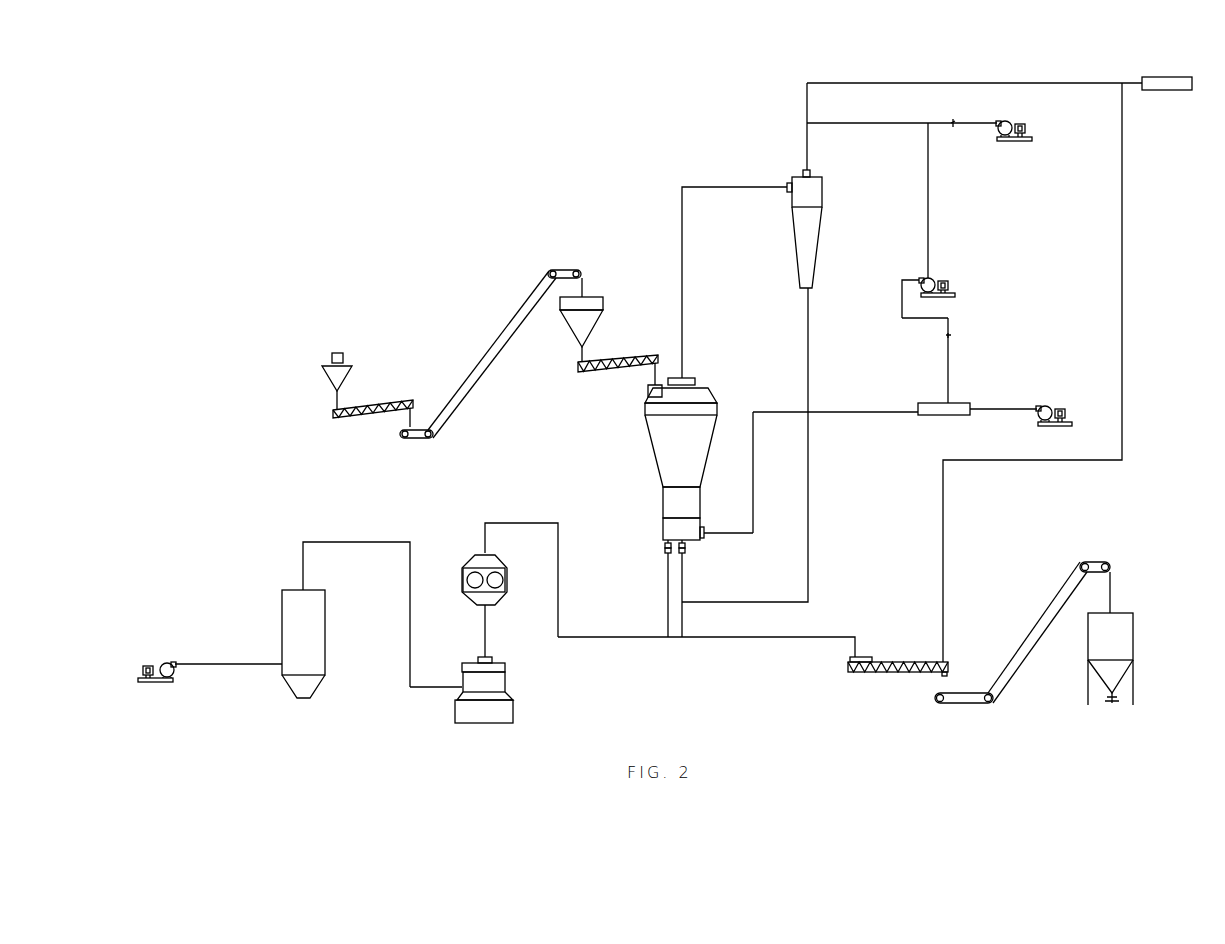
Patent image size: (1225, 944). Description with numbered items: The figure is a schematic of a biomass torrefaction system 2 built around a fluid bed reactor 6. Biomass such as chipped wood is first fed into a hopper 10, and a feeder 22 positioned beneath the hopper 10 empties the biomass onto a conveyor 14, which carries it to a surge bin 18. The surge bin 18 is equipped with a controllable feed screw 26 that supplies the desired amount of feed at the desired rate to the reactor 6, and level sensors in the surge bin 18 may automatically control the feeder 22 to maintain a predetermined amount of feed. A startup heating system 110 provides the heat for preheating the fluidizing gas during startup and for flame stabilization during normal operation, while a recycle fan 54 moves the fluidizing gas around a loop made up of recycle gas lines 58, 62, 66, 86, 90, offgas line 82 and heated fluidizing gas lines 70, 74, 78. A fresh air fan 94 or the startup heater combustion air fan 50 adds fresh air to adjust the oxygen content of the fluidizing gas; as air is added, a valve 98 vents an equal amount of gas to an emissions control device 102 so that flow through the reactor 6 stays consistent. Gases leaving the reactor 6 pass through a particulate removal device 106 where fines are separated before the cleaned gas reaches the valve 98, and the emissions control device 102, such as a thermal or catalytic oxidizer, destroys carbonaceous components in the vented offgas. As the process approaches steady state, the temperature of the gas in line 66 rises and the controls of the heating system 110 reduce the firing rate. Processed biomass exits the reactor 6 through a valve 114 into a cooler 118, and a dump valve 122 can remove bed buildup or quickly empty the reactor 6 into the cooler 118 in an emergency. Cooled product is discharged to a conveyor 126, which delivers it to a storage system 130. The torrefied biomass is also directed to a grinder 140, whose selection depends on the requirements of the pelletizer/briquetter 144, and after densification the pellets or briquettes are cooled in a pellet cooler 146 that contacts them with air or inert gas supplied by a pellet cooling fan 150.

The biomass torrefaction system 2 is at (667, 206).
The hopper 10 is at (322, 360).
The feeder 22 is at (332, 412).
The conveyor 14 is at (517, 310).
The surge bin 18 is at (607, 303).
The feed screw 26 is at (607, 358).
The fluid bed reactor 6 is at (708, 392).
The offgas line 82 is at (717, 185).
The particulate removal device 106 is at (827, 177).
The valve 98 is at (918, 80).
The emissions control device 102 is at (1168, 75).
The recycled gas line 86 is at (862, 121).
The fresh air fan 94 is at (1025, 122).
The recycled gas line 90 is at (927, 243).
The recycle fan 54 is at (953, 280).
The recycle gas line 58 is at (900, 297).
The recycle gas line 62 is at (942, 316).
The recycle gas line 66 is at (952, 357).
The startup heating system 110 is at (962, 402).
The startup heater combustion air fan 50 is at (1052, 403).
The heated fluidizing gas line 70 is at (848, 411).
The heated fluidizing gas line 74 is at (755, 468).
The heated fluidizing gas line 78 is at (708, 532).
The dump valve 122 is at (665, 545).
The valve 114 is at (685, 548).
The cooler 118 is at (883, 660).
The conveyor 126 is at (1055, 595).
The storage system 130 is at (1138, 626).
The grinder 140 is at (472, 557).
The pelletizer/briquetter 144 is at (472, 658).
The pellet cooler 146 is at (280, 625).
The pellet cooling fan 150 is at (145, 665).